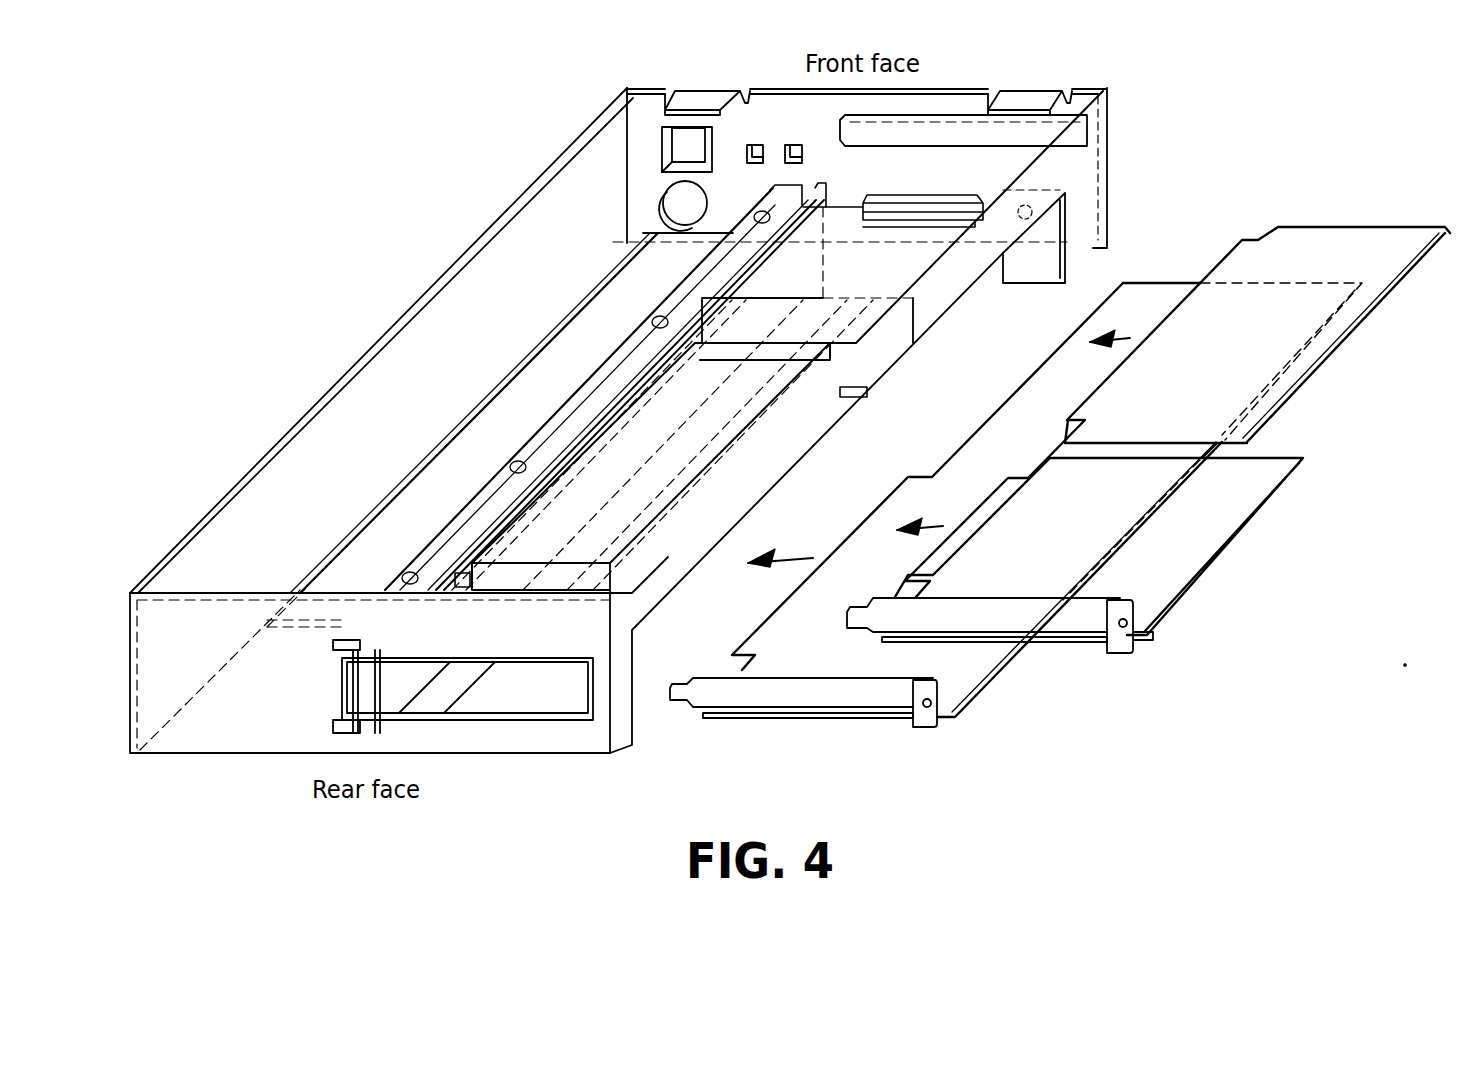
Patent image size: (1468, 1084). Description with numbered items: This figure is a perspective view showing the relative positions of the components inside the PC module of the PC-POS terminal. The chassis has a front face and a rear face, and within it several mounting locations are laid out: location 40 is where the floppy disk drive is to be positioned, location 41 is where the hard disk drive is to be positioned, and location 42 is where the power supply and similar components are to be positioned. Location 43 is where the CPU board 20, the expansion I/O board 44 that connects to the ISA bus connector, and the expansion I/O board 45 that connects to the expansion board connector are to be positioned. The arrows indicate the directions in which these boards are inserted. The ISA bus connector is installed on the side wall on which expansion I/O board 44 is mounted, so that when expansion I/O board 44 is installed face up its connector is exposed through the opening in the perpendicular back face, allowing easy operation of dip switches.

The CPU board 20 is at (1333, 226).
The location for floppy disk drive 40 is at (843, 213).
The location for hard disk drive 41 is at (643, 410).
The location for power supply 42 is at (382, 526).
The location for CPU board and expansion I/O boards 43 is at (938, 350).
The expansion I/O board 44 is at (988, 687).
The expansion I/O board 45 is at (1267, 460).